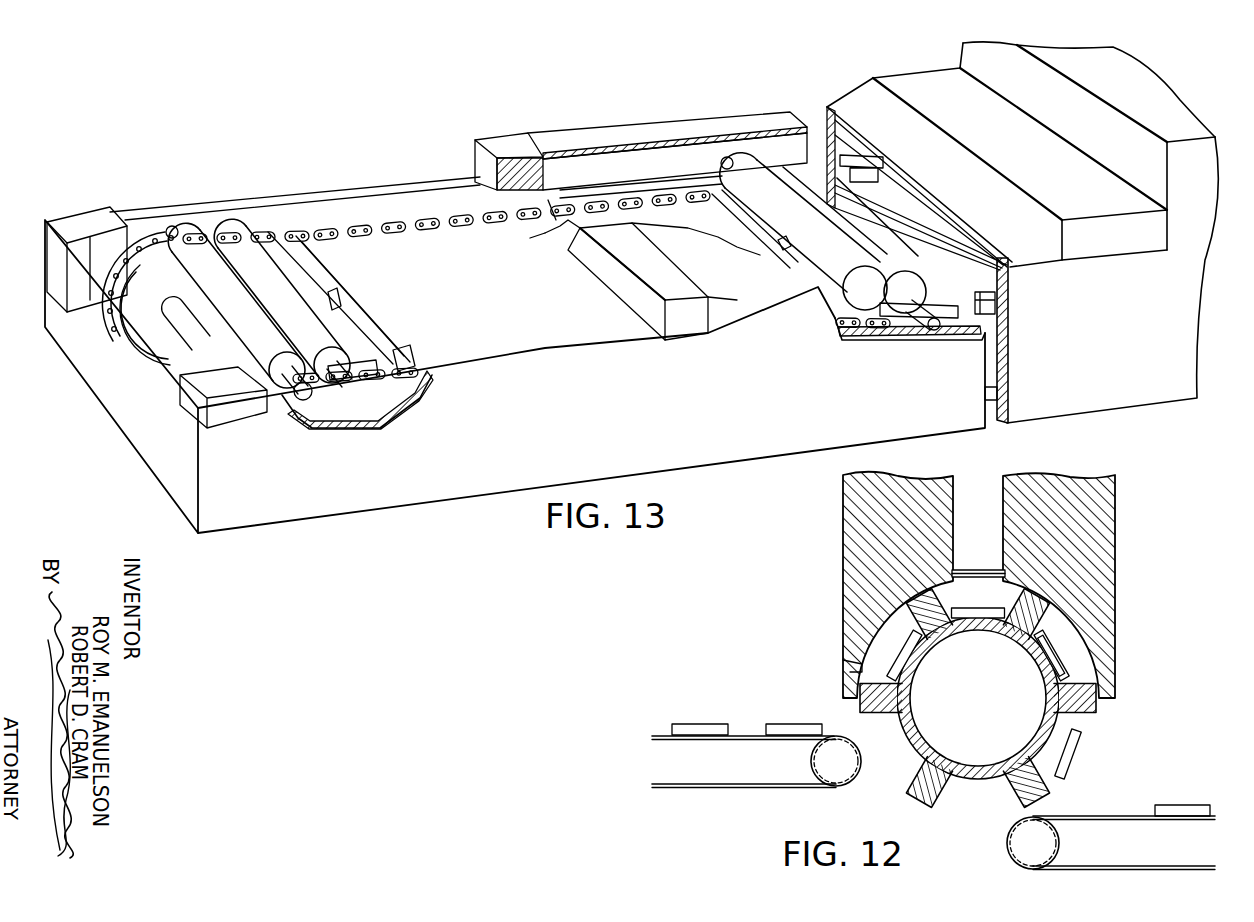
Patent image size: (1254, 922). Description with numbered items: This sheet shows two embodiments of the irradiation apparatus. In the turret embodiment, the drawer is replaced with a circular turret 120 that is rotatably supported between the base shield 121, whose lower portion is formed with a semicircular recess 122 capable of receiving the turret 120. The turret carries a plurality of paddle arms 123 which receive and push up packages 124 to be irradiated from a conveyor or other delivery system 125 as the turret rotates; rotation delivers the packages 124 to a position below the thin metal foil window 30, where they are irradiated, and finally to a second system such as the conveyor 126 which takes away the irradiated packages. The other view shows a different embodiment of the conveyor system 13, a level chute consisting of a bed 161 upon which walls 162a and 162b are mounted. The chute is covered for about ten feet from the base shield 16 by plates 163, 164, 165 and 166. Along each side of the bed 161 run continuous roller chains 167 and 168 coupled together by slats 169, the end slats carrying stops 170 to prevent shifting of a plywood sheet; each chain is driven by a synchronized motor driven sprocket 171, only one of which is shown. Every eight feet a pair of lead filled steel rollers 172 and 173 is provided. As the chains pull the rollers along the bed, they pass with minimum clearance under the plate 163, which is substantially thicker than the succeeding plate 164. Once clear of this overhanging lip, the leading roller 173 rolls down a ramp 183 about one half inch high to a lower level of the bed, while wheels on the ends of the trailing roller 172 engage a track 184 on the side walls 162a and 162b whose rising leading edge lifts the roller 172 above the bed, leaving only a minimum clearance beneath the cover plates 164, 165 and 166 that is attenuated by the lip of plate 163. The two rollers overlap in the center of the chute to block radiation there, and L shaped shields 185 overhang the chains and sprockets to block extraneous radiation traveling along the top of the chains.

In FIG. 13, the conveyor system 13 is at (515, 290).
In FIG. 13, the base shield 16 is at (1035, 230).
In FIG. 12, the thin metal foil window 30 is at (985, 570).
In FIG. 12, the circular turret 120 is at (978, 698).
In FIG. 12, the base shield 121 is at (1105, 568).
In FIG. 12, the semicircular recess 122 is at (852, 668).
In FIG. 12, the paddle arms 123 is at (978, 698).
In FIG. 12, the packages 124 is at (698, 723).
In FIG. 12, the conveyor or other delivery system 125 is at (732, 787).
In FIG. 12, the conveyor 126 is at (1112, 807).
In FIG. 13, the bed 161 is at (498, 304).
In FIG. 13, the wall 162a is at (606, 416).
In FIG. 13, the wall 162b is at (332, 186).
In FIG. 13, the plate 163 is at (510, 140).
In FIG. 13, the plate 164 is at (632, 131).
In FIG. 13, the plate 165 is at (853, 110).
In FIG. 13, the plate 166 is at (931, 80).
In FIG. 13, the roller chain 167 is at (398, 222).
In FIG. 13, the roller chain 168 is at (400, 360).
In FIG. 13, the slats 169 is at (368, 330).
In FIG. 13, the stops 170 is at (340, 300).
In FIG. 13, the sprocket 171 is at (132, 342).
In FIG. 13, the trailing roller 172 is at (189, 236).
In FIG. 13, the leading roller 173 is at (236, 240).
In FIG. 13, the ramp 183 is at (570, 231).
In FIG. 13, the track 184 is at (570, 186).
In FIG. 13, the L shaped shields 185 is at (48, 216).